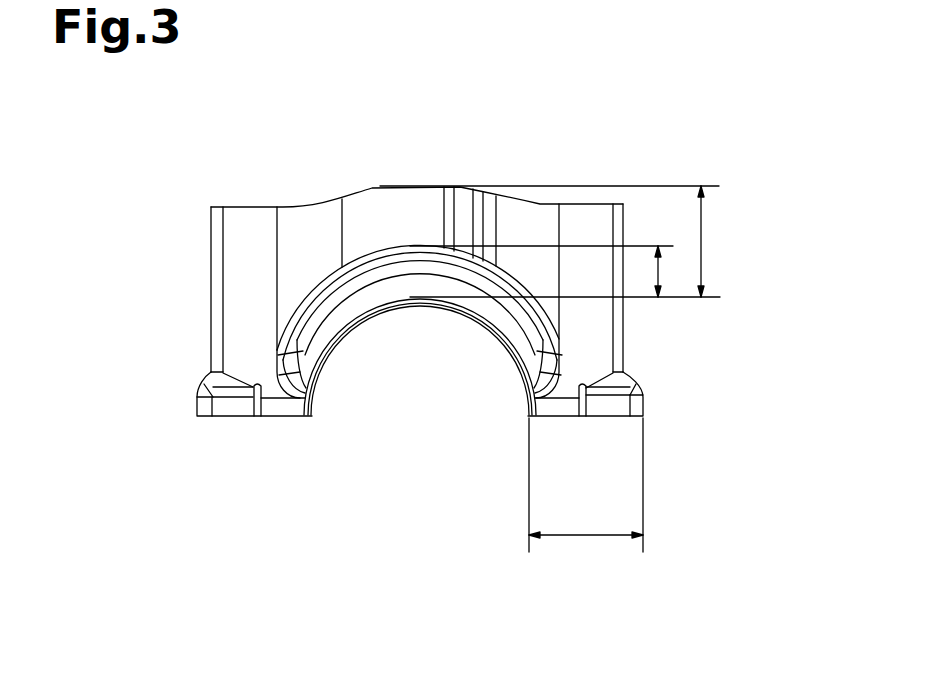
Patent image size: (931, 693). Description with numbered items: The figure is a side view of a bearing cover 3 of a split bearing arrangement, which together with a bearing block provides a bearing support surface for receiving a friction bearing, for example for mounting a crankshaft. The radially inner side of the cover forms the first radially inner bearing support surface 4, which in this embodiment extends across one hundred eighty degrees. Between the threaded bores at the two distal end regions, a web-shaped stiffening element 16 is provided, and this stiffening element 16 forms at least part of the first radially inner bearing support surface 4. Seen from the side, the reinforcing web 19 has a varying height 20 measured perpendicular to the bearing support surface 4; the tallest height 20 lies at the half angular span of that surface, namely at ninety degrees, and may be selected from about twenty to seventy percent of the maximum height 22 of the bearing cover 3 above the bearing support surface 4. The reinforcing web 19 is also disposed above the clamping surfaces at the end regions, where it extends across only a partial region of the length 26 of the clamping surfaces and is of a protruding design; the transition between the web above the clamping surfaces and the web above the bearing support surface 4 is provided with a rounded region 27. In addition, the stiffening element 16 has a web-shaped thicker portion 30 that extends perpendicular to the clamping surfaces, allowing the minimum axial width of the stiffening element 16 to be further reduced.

The bearing cover 3 is at (476, 156).
The first radially inner bearing support surface 4 is at (449, 311).
The stiffening element 16 is at (374, 198).
The reinforcing web 19 is at (370, 309).
The height 20 is at (659, 277).
The maximum height 22 is at (702, 237).
The length 26 is at (597, 535).
The rounded region 27 is at (562, 382).
The thicker portion 30 is at (460, 190).